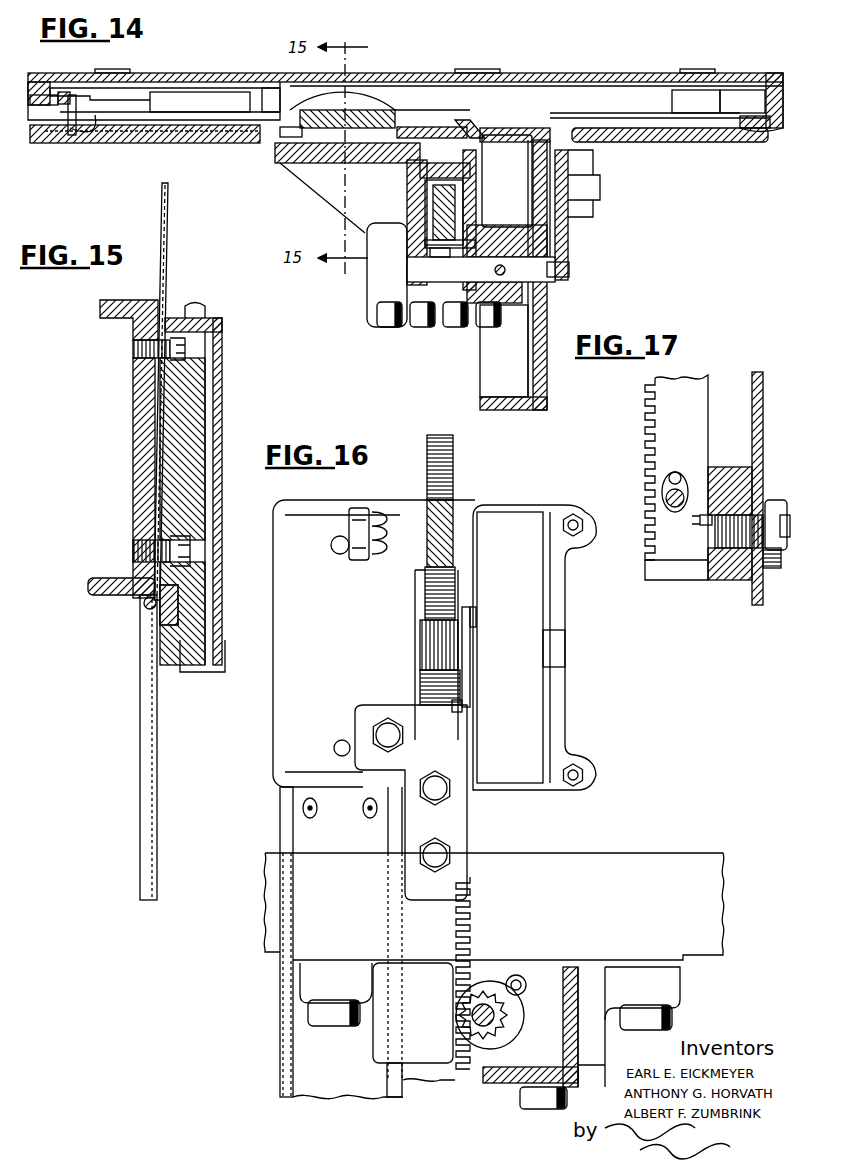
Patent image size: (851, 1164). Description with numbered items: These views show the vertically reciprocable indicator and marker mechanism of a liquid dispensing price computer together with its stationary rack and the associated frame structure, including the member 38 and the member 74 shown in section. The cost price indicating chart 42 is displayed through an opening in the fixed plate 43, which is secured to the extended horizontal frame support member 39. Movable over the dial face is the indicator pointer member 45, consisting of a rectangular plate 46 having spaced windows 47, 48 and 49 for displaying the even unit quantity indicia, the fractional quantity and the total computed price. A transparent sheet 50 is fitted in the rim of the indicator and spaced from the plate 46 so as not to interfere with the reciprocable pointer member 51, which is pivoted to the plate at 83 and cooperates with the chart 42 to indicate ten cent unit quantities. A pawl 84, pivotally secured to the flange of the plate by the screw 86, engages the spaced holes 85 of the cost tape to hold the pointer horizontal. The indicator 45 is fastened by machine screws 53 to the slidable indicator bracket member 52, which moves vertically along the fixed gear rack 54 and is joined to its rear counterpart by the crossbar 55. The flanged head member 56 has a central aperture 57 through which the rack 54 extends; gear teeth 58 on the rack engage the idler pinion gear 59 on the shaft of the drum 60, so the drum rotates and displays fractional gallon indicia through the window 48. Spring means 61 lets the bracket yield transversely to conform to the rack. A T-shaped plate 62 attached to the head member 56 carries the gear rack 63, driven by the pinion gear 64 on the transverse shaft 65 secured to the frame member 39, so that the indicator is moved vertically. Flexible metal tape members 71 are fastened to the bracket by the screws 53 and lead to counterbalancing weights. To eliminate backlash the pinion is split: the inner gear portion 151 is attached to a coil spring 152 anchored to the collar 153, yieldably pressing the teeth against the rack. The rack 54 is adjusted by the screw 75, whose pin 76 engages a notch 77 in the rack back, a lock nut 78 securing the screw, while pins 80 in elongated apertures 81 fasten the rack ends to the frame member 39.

In FIG. 14, the plate 38 is at (668, 142).
In FIG. 16, the horizontal frame support member 39 is at (670, 861).
In FIG. 17, the horizontal frame support member 39 is at (740, 581).
In FIG. 14, the cost price indicating chart 42 is at (158, 130).
In FIG. 14, the fixed plate 43 is at (40, 125).
In FIG. 14, the indicator pointer member 45 is at (768, 74).
In FIG. 14, the rectangular plate 46 is at (778, 130).
In FIG. 14, the window 47 is at (618, 118).
In FIG. 14, the window 48 is at (515, 128).
In FIG. 14, the window 49 is at (230, 112).
In FIG. 14, the transparent sheet 50 is at (449, 84).
In FIG. 14, the pointer member 51 is at (170, 85).
In FIG. 14, the slidable indicator bracket member 52 is at (322, 211).
In FIG. 15, the slidable indicator bracket member 52 is at (131, 465).
In FIG. 16, the slidable indicator bracket member 52 is at (321, 500).
In FIG. 15, the machine screw 53 is at (147, 345).
In FIG. 14, the fixed gear rack 54 is at (457, 212).
In FIG. 16, the fixed gear rack 54 is at (428, 473).
In FIG. 17, the fixed gear rack 54 is at (695, 379).
In FIG. 16, the crossbar 55 is at (430, 541).
In FIG. 14, the flanged head member 56 is at (312, 172).
In FIG. 15, the flanged head member 56 is at (100, 309).
In FIG. 16, the flanged head member 56 is at (373, 668).
In FIG. 14, the central aperture 57 is at (416, 205).
In FIG. 16, the gear teeth 58 is at (451, 461).
In FIG. 17, the gear teeth 58 is at (645, 441).
In FIG. 14, the idler pinion gear 59 is at (437, 302).
In FIG. 16, the idler pinion gear 59 is at (421, 655).
In FIG. 14, the drum 60 is at (486, 370).
In FIG. 16, the drum 60 is at (545, 597).
In FIG. 16, the spring means 61 is at (368, 553).
In FIG. 14, the T-shaped plate 62 is at (370, 298).
In FIG. 16, the T-shaped plate 62 is at (467, 819).
In FIG. 16, the gear rack 63 is at (465, 907).
In FIG. 16, the pinion gear 64 is at (505, 1015).
In FIG. 16, the transverse shaft 65 is at (512, 1026).
In FIG. 15, the flexible metal tape member 71 is at (165, 270).
In FIG. 15, the shaft 74 is at (157, 796).
In FIG. 16, the shaft 74 is at (285, 1037).
In FIG. 17, the screw 75 is at (782, 505).
In FIG. 17, the pin 76 is at (705, 515).
In FIG. 17, the notch 77 is at (706, 522).
In FIG. 17, the lock nut 78 is at (775, 566).
In FIG. 17, the pin 80 is at (682, 506).
In FIG. 17, the elongated aperture 81 is at (683, 480).
In FIG. 14, the pivot 83 is at (85, 86).
In FIG. 14, the pawl 84 is at (80, 108).
In FIG. 14, the spaced holes 85 is at (62, 106).
In FIG. 14, the screw 86 is at (80, 118).
In FIG. 14, the inner gear portion 151 is at (456, 303).
In FIG. 16, the inner gear portion 151 is at (453, 701).
In FIG. 14, the coil spring 152 is at (477, 303).
In FIG. 16, the coil spring 152 is at (485, 616).
In FIG. 14, the collar 153 is at (492, 238).
In FIG. 16, the collar 153 is at (480, 671).